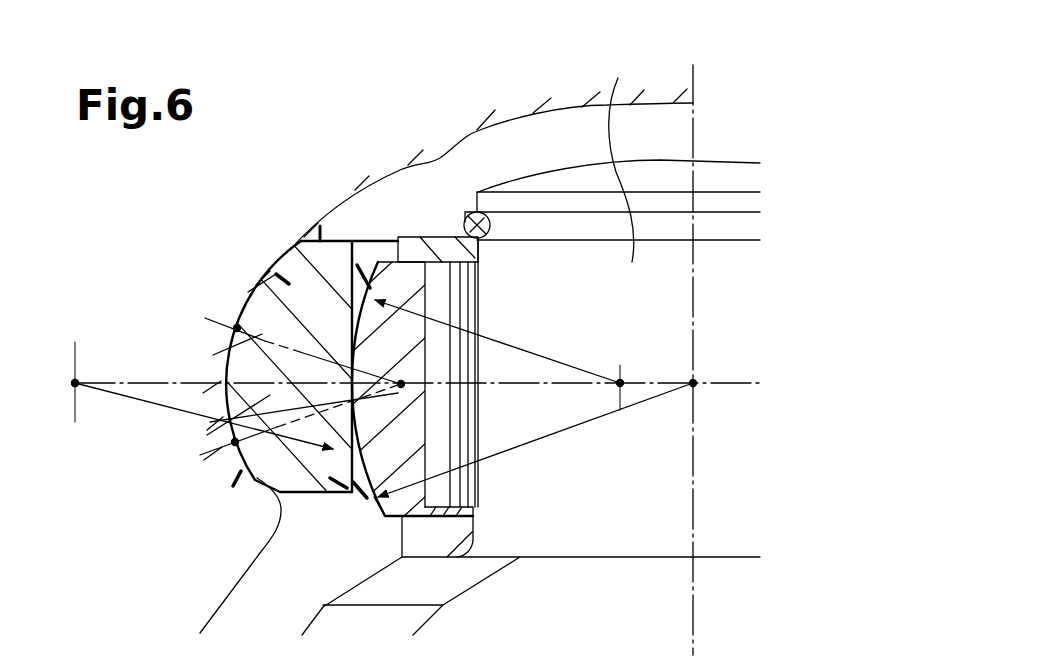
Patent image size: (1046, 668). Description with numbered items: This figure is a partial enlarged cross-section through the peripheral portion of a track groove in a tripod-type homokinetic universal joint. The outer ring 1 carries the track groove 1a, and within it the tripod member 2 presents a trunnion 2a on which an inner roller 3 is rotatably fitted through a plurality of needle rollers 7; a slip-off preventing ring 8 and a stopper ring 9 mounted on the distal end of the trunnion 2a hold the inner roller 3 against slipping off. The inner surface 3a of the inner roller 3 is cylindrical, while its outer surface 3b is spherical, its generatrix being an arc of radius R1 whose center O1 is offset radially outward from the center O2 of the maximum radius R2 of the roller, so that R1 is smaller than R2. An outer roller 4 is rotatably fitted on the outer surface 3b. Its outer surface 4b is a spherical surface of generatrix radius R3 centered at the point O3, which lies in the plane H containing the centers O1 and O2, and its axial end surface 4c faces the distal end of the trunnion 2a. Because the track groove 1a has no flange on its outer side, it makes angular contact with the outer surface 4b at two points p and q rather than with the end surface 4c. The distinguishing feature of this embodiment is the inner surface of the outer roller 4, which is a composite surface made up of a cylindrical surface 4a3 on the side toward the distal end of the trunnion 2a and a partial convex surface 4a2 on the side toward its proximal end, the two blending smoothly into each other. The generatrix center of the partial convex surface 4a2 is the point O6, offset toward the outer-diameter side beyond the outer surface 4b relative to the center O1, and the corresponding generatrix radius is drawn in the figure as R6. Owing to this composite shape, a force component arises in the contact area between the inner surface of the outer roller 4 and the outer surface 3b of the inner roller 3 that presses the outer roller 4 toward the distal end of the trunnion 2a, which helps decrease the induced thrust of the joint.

The outer ring 1 is at (193, 597).
The track groove 1a is at (226, 370).
The tripod member 2 is at (355, 636).
The trunnion 2a is at (617, 152).
The inner roller 3 is at (390, 250).
The inner surface of the inner roller 3a is at (478, 303).
The outer surface of the inner roller 3b is at (378, 512).
The outer roller 4 is at (252, 500).
The partial convex surface 4a2 is at (348, 489).
The cylindrical surface 4a3 is at (368, 256).
The outer surface of the outer roller 4b is at (238, 478).
The axial end surface of the outer roller 4c is at (320, 228).
The needle rollers 7 is at (473, 510).
The slip-off preventing ring 8 is at (447, 250).
The stopper ring 9 is at (468, 212).
The plane H is at (70, 385).
The generatrix center of the outer surface 3b O1 is at (623, 381).
The radius center of the maximum radius R2 O2 is at (698, 381).
The spherical surface center of the outer surface 4b O3 is at (405, 384).
The generatrix center of the partial convex surface 4a2 O6 is at (80, 380).
The generatrix radius of the outer surface 3b R1 is at (497, 341).
The maximum radius of the inner roller R2 is at (535, 440).
The generatrix radius of the outer surface 4b R3 is at (263, 250).
The radius R6 is at (204, 416).
The contact point p is at (237, 328).
The contact point q is at (235, 458).